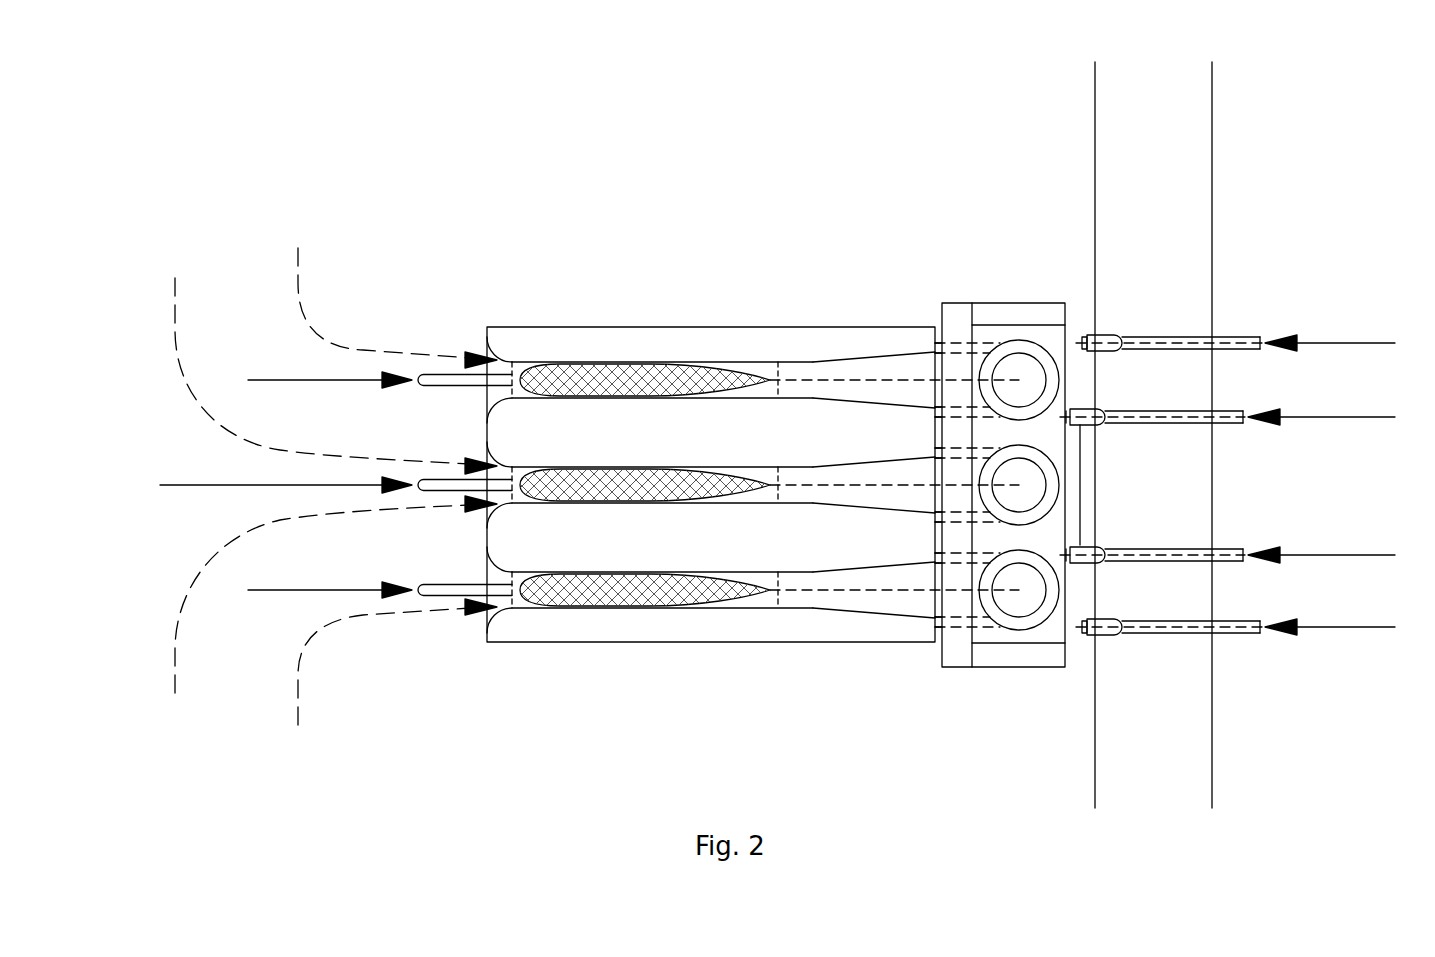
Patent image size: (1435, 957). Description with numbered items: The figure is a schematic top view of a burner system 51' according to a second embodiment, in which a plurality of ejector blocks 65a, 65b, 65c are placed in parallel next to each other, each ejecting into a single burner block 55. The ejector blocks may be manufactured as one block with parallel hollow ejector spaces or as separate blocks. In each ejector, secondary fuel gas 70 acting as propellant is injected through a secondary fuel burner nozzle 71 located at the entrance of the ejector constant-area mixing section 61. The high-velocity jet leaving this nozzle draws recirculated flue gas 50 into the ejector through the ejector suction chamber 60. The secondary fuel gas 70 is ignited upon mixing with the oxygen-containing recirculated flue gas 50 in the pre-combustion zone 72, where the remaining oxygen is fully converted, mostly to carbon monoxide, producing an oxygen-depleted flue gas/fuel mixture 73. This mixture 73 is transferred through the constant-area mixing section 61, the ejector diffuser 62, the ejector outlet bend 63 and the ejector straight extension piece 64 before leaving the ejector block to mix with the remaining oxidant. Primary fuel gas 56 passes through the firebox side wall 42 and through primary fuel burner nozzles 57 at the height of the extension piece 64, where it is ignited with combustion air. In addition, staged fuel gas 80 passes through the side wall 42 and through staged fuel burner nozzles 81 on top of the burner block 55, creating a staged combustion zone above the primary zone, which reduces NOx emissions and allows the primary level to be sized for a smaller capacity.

The firebox side wall 42 is at (1212, 190).
The recirculated flue gas 50 is at (175, 305).
The burner system 51' is at (711, 414).
The burner block 55 is at (942, 305).
The primary fuel gas 56 is at (1340, 417).
The primary fuel burner nozzles 57 is at (1094, 419).
The ejector suction chamber 60 is at (502, 355).
The ejector constant-area mixing section 61 is at (557, 362).
The ejector diffuser 62 is at (812, 362).
The ejector outlet bend 63 is at (979, 362).
The ejector straight extension piece 64 is at (1030, 349).
The ejector block 65a is at (663, 630).
The ejector block 65b is at (718, 542).
The ejector block 65c is at (663, 343).
The secondary fuel gas 70 is at (272, 380).
The secondary fuel burner nozzle 71 is at (500, 382).
The pre-combustion zone 72 is at (603, 377).
The oxygen-depleted flue gas/fuel mixture 73 is at (850, 378).
The staged fuel gas 80 is at (1358, 343).
The staged fuel burner nozzles 81 is at (1112, 340).